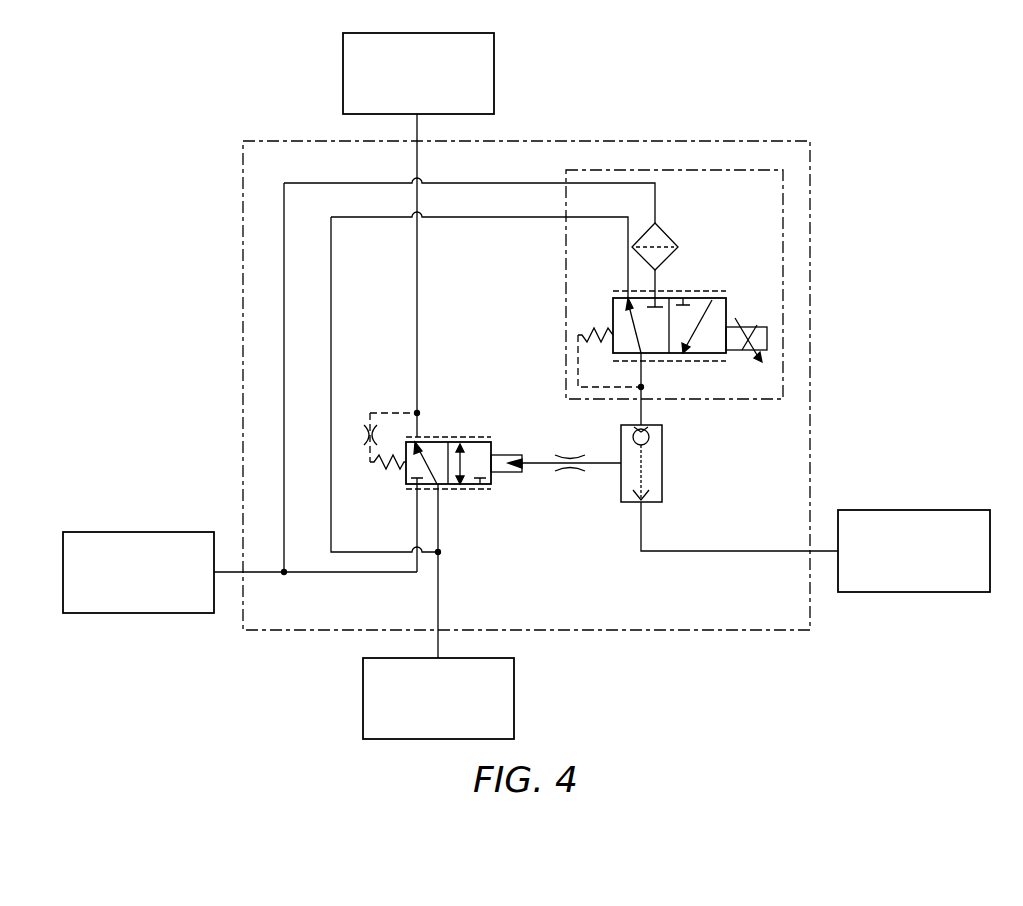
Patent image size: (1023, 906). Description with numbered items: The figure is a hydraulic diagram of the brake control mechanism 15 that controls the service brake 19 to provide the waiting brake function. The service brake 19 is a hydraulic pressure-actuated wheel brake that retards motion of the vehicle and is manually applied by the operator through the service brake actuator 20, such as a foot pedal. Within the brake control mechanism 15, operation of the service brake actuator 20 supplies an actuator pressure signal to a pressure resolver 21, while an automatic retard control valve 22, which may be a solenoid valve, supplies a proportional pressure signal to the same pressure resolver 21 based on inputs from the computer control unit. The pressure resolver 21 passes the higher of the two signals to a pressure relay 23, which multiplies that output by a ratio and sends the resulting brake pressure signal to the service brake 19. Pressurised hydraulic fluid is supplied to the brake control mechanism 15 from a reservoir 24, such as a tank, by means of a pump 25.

The brake control mechanism 15 is at (768, 102).
The service brake 19 is at (418, 73).
The service brake actuator 20 is at (914, 551).
The pressure resolver 21 is at (662, 435).
The automatic retard control (ARC) valve 22 is at (783, 187).
The pressure relay 23 is at (365, 432).
The reservoir 24 is at (438, 698).
The pump 25 is at (138, 572).